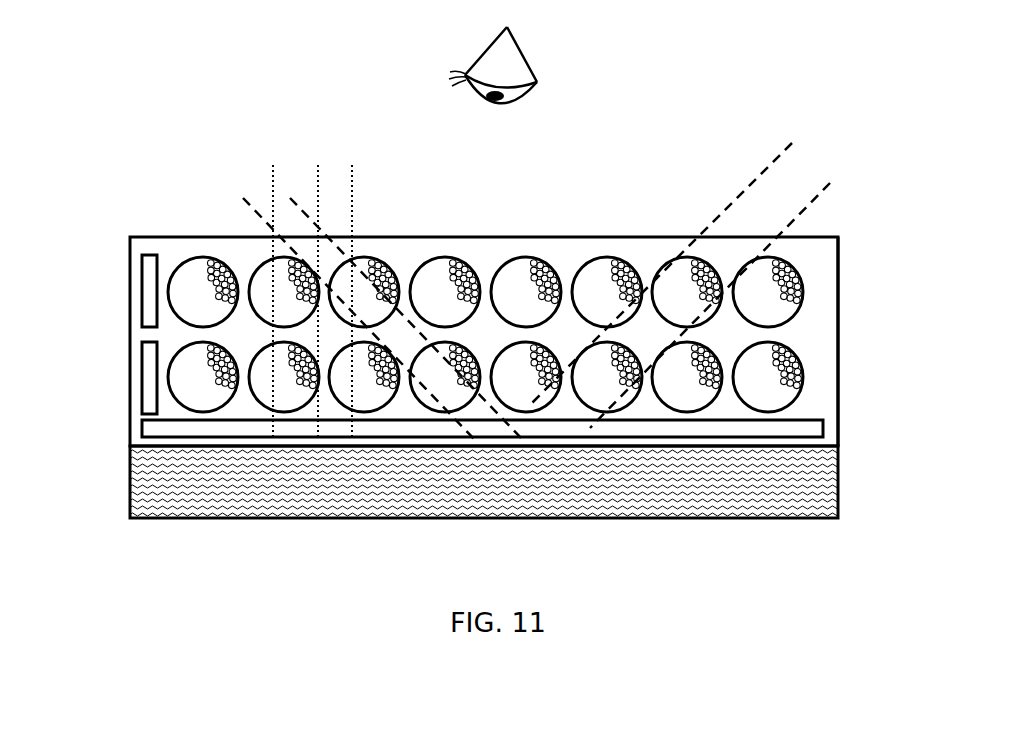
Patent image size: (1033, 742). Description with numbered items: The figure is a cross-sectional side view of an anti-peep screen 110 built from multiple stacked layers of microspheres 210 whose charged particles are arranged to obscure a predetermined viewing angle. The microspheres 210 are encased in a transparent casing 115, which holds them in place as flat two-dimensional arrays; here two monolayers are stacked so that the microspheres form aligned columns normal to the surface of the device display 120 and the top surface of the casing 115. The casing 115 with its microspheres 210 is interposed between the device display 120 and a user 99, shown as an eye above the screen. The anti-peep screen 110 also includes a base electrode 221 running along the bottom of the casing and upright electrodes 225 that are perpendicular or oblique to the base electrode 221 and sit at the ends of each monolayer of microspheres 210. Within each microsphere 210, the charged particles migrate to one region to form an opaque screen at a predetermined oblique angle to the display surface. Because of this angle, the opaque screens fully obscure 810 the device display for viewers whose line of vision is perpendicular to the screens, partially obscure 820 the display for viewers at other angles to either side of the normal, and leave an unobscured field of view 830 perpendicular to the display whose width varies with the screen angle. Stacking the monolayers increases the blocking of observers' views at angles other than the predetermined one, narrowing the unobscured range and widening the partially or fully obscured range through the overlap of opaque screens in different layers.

The user 99 is at (513, 54).
The anti-peep screen 110 is at (160, 200).
The transparent casing 115 is at (820, 362).
The device display 120 is at (185, 477).
The microspheres 210 is at (190, 383).
The base electrode 221 is at (155, 429).
The upright electrode 225 is at (147, 278).
The fully obscure 810 is at (701, 277).
The partially obscure 820 is at (318, 167).
The unobscured field of view 830 is at (352, 167).